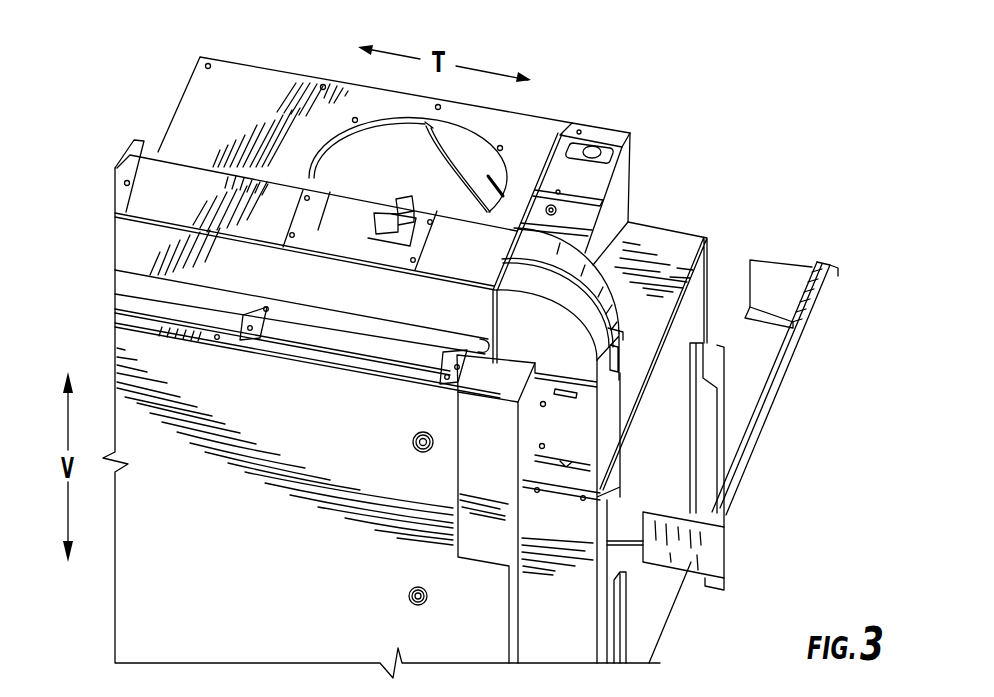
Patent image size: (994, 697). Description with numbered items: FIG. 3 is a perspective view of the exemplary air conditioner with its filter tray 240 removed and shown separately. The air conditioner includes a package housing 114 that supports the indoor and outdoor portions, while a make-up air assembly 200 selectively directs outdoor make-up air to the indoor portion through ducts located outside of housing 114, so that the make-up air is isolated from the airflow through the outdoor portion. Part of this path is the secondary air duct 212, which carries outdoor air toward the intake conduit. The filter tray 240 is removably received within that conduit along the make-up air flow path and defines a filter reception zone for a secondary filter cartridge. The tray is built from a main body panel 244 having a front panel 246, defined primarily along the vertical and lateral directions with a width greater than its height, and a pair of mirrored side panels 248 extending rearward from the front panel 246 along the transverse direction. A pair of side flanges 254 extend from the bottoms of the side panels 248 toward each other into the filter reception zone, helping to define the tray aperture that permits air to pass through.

The package housing 114 is at (275, 93).
The make-up air assembly 200 is at (153, 134).
The secondary air duct 212 is at (210, 278).
The filter tray 240 is at (843, 228).
The main body panel 244 is at (834, 322).
The front panel 246 is at (773, 426).
The side panels 248 is at (775, 262).
The side flanges 254 is at (760, 328).